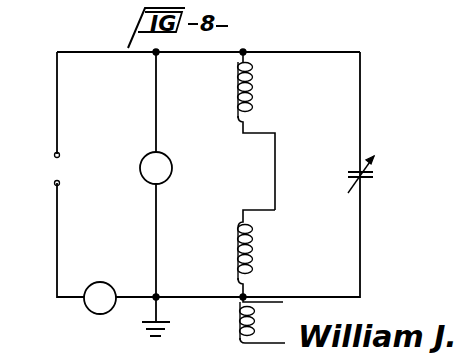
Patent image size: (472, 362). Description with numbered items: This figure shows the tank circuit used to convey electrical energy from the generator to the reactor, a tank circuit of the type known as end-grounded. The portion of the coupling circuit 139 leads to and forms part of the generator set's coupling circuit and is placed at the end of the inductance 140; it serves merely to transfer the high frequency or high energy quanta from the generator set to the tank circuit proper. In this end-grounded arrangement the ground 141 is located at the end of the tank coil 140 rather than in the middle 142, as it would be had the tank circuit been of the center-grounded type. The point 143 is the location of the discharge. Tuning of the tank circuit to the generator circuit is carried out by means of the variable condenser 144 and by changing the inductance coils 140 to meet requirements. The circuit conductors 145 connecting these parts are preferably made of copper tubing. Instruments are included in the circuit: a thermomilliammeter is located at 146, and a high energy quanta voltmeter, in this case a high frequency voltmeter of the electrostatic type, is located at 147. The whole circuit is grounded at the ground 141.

The coupling circuit portion 139 is at (236, 318).
The tank coil 140 is at (252, 253).
The ground 141 is at (145, 333).
The middle of the tank coil 142 is at (275, 158).
The discharge point 143 is at (60, 167).
The variable condenser 144 is at (364, 183).
The circuit conductors 145 is at (93, 55).
The thermomilliammeter 146 is at (108, 271).
The high energy quanta voltmeter 147 is at (170, 175).